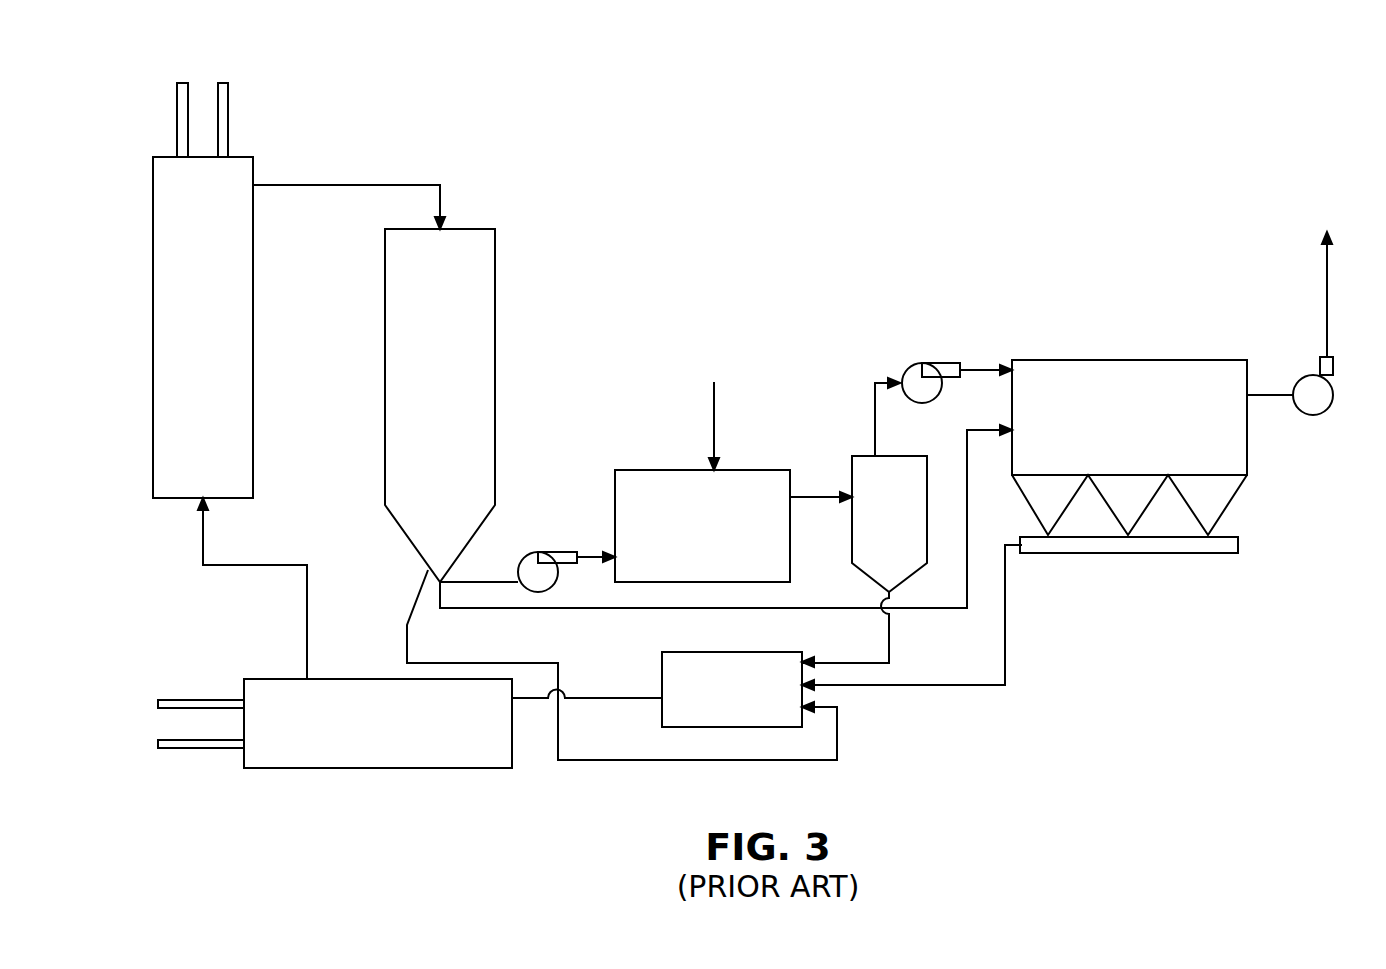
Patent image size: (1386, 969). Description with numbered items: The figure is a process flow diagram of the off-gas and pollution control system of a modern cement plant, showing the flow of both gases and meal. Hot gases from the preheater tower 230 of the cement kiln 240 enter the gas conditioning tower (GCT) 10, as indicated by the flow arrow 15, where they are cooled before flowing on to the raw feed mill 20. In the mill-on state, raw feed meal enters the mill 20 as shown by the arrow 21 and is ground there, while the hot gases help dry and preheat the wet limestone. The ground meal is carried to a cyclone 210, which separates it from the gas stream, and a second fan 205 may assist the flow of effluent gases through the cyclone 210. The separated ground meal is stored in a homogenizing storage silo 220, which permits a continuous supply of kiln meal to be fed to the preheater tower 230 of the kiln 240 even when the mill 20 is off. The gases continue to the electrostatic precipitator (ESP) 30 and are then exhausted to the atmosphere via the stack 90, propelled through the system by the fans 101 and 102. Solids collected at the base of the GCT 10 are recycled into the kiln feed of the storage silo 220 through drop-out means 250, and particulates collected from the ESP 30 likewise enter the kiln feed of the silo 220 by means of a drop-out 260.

The gas conditioning tower (GCT) 10 is at (428, 358).
The flow arrow 15 is at (340, 185).
The raw feed mill 20 is at (715, 539).
The arrow 21 is at (716, 410).
The electrostatic precipitator (ESP) 30 is at (1140, 428).
The stack 90 is at (1333, 368).
The fan 101 is at (1315, 415).
The fan 102 is at (544, 552).
The second fan 205 is at (923, 362).
The cyclone 210 is at (872, 523).
The homogenizing storage silo 220 is at (750, 703).
The preheater tower 230 is at (221, 273).
The cement kiln 240 is at (397, 739).
The drop-out means 250 is at (405, 642).
The drop-out 260 is at (1005, 637).